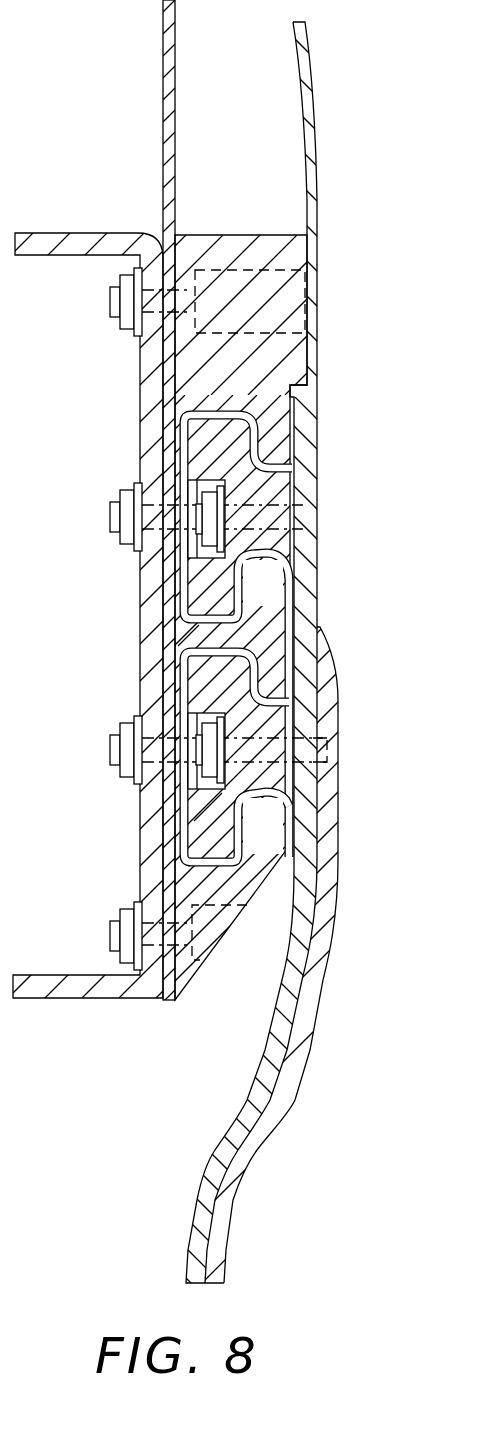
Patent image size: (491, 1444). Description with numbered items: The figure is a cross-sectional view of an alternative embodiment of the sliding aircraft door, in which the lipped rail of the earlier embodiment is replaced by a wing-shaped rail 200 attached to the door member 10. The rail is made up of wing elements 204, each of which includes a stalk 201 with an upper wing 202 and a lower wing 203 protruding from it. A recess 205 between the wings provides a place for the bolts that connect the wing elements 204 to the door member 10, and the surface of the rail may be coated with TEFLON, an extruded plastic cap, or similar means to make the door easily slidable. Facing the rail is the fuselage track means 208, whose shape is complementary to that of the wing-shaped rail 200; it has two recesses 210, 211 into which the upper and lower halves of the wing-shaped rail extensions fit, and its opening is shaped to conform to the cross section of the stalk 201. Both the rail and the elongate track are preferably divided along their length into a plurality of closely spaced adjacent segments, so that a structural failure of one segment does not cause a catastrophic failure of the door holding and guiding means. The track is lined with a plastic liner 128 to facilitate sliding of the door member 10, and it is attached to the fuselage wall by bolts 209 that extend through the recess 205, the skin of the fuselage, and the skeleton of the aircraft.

The door member 10 is at (232, 1152).
The plastic liner 128 is at (185, 848).
The wing-shaped rail 200 is at (326, 441).
The stalk 201 is at (283, 543).
The upper wing 202 is at (213, 690).
The lower wing 203 is at (207, 813).
The wing elements 204 is at (290, 488).
The recess 205 is at (190, 702).
The fuselage track means 208 is at (190, 633).
The bolts 209 is at (112, 511).
The recess 210 is at (197, 488).
The recess 211 is at (197, 727).